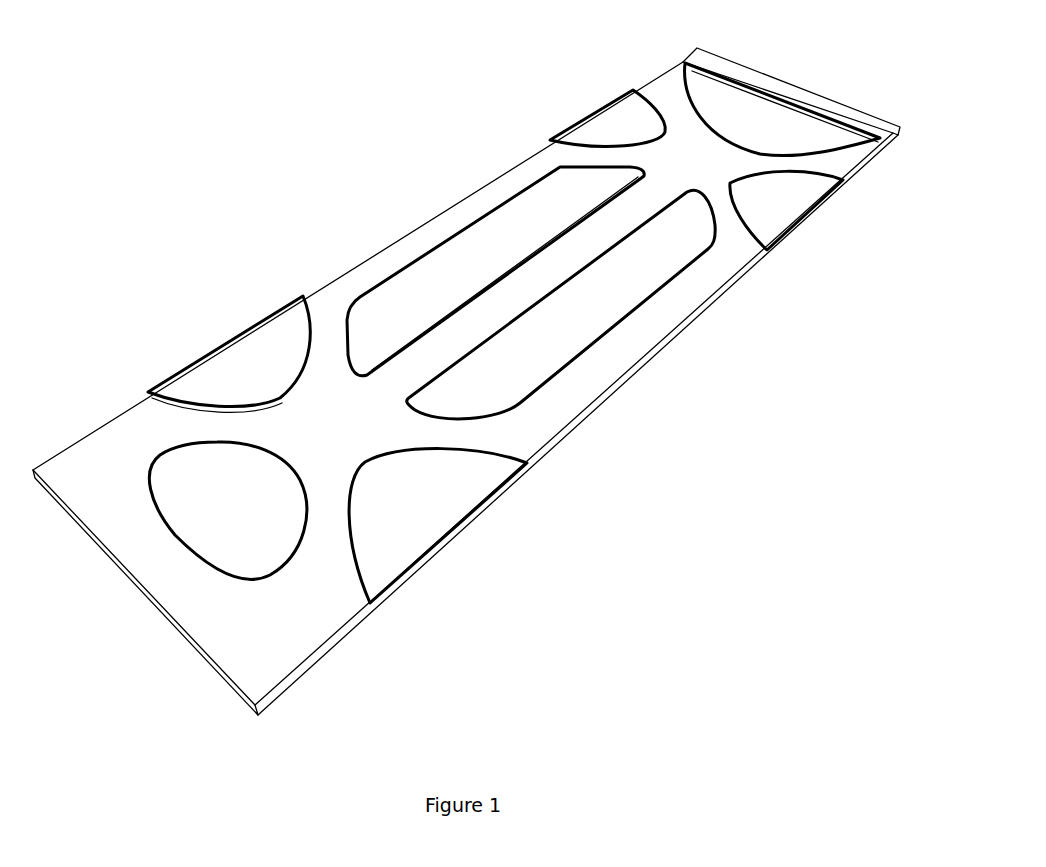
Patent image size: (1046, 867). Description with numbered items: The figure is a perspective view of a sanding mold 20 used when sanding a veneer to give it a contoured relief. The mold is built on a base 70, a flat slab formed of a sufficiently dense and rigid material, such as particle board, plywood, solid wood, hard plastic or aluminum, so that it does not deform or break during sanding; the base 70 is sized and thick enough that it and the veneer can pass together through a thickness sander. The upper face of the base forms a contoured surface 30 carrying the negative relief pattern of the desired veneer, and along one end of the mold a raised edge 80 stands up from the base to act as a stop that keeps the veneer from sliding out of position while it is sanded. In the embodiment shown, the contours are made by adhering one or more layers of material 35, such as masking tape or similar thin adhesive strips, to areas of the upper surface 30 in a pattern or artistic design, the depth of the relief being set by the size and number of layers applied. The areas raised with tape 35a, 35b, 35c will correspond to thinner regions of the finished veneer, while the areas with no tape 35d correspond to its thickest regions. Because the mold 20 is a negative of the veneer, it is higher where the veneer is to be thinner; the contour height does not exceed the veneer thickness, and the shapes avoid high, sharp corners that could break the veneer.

The sanding mold 20 is at (367, 208).
The contoured surface 30 is at (172, 427).
The layers of material 35 is at (633, 133).
The tape-raised area 35a is at (523, 257).
The tape-raised area 35b is at (798, 208).
The tape-raised area 35c is at (783, 128).
The area with no tape 35d is at (378, 413).
The base 70 is at (585, 423).
The raised edge 80 is at (830, 98).